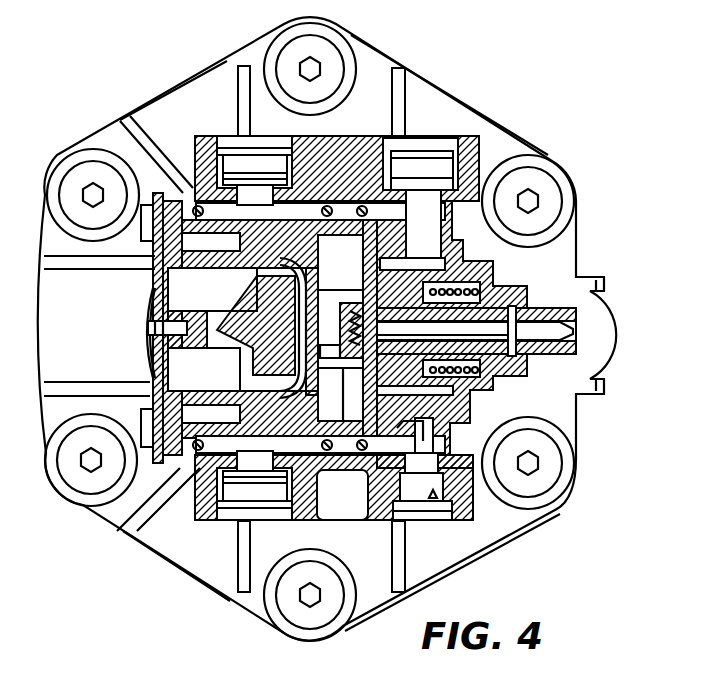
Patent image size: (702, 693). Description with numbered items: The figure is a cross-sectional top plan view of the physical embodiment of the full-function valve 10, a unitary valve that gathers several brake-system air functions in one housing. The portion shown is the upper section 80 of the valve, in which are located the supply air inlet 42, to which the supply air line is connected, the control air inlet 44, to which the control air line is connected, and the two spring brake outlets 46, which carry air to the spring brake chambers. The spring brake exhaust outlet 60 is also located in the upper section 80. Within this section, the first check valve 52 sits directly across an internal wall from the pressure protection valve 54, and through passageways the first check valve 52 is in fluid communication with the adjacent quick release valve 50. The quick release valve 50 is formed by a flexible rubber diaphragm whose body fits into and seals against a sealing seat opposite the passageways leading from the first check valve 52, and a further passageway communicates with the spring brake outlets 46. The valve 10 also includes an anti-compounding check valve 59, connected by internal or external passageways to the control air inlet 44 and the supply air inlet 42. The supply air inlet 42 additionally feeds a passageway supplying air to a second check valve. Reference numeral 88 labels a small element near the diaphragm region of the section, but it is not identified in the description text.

The full-function valve 10 is at (105, 125).
The supply air inlet 42 is at (419, 164).
The control air inlet 44 is at (405, 512).
The spring brake outlet 46 is at (236, 158).
The quick release valve 50 is at (267, 313).
The first check valve 52 is at (334, 292).
The pressure protection valve 54 is at (503, 292).
The anti-compounding check valve 59 is at (370, 455).
The spring brake exhaust outlet 60 is at (150, 300).
The upper section 80 is at (486, 158).
The stud 88 is at (152, 378).